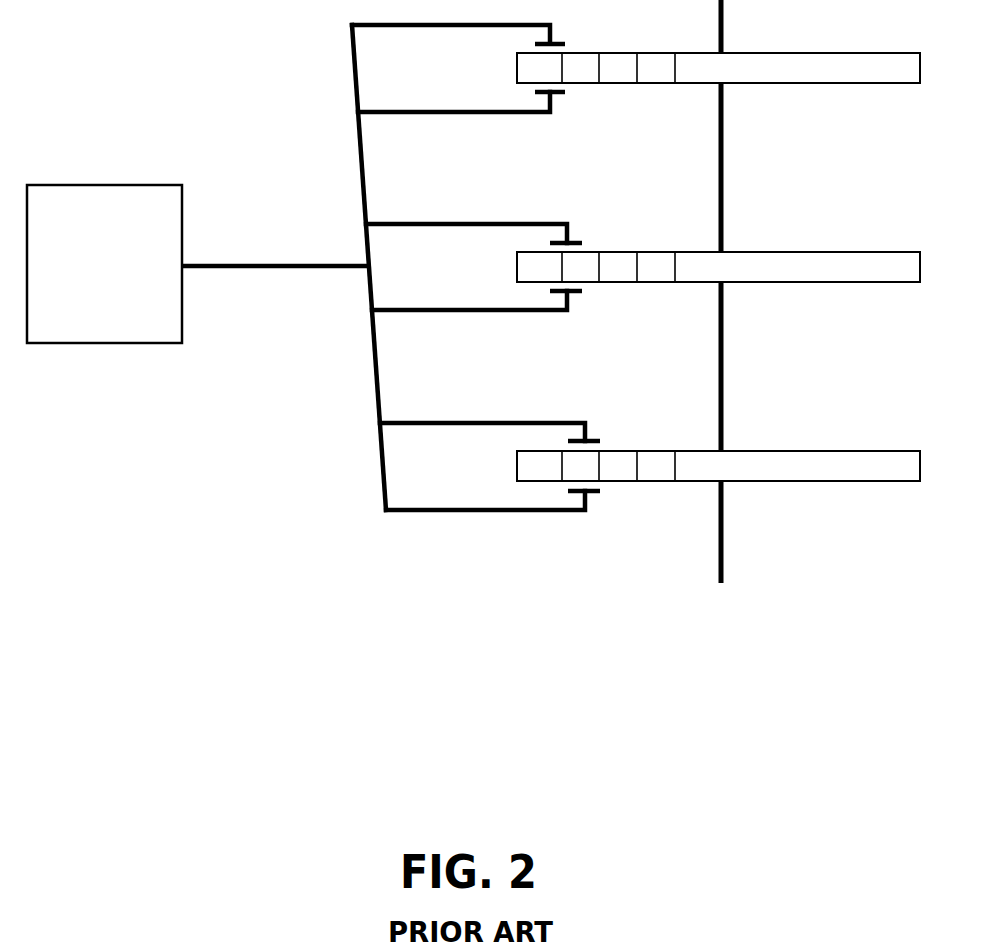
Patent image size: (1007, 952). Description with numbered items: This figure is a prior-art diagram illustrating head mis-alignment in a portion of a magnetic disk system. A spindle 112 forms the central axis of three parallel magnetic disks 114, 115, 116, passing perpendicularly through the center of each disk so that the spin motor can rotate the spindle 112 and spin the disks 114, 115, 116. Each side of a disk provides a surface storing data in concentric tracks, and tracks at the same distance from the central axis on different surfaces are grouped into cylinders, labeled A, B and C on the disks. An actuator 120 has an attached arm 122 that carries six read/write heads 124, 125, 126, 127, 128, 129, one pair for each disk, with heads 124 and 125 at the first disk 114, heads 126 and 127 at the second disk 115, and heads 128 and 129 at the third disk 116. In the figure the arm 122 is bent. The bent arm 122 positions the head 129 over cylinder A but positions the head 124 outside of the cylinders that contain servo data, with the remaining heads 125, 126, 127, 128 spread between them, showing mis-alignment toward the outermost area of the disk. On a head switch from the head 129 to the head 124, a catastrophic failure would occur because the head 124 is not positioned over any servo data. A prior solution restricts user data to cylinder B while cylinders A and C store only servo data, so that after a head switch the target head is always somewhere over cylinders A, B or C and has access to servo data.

The spindle 112 is at (723, 376).
The magnetic disk 114 is at (815, 84).
The magnetic disk 115 is at (816, 283).
The magnetic disk 116 is at (817, 482).
The actuator 120 is at (93, 344).
The arm 122 is at (278, 268).
The read/write head 124 is at (545, 42).
The read/write head 125 is at (545, 97).
The read/write head 126 is at (556, 241).
The read/write head 127 is at (556, 294).
The read/write head 128 is at (574, 440).
The read/write head 129 is at (574, 494).